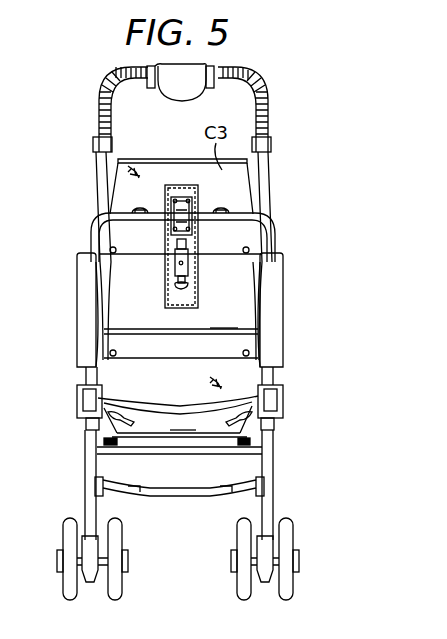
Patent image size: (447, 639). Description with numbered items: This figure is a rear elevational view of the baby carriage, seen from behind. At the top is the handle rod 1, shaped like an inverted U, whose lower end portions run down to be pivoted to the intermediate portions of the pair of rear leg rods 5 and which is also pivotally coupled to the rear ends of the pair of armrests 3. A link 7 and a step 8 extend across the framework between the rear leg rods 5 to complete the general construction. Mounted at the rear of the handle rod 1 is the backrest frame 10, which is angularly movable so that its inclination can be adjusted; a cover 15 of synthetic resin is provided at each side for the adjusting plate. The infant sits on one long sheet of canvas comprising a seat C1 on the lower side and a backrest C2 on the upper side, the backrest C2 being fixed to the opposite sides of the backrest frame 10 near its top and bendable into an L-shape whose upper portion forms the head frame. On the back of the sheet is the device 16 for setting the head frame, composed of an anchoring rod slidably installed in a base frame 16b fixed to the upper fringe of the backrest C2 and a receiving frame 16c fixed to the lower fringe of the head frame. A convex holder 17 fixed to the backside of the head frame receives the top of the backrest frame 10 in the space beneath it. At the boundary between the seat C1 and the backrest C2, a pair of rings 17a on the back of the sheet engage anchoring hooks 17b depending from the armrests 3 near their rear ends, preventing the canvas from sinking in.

The handle rod 1 is at (268, 80).
The armrest 3 is at (81, 396).
The rear leg rod 5 is at (85, 496).
The link 7 is at (168, 497).
The step 8 is at (168, 447).
The backrest frame 10 is at (275, 235).
The cover 15 is at (88, 322).
The device for setting the head frame 16 is at (217, 239).
The base frame 16b is at (173, 264).
The receiving frame 16c is at (184, 244).
The holder 17 is at (186, 206).
The ring 17a is at (128, 447).
The anchoring hook 17b is at (95, 426).
The seat C1 is at (178, 407).
The backrest C2 is at (180, 303).